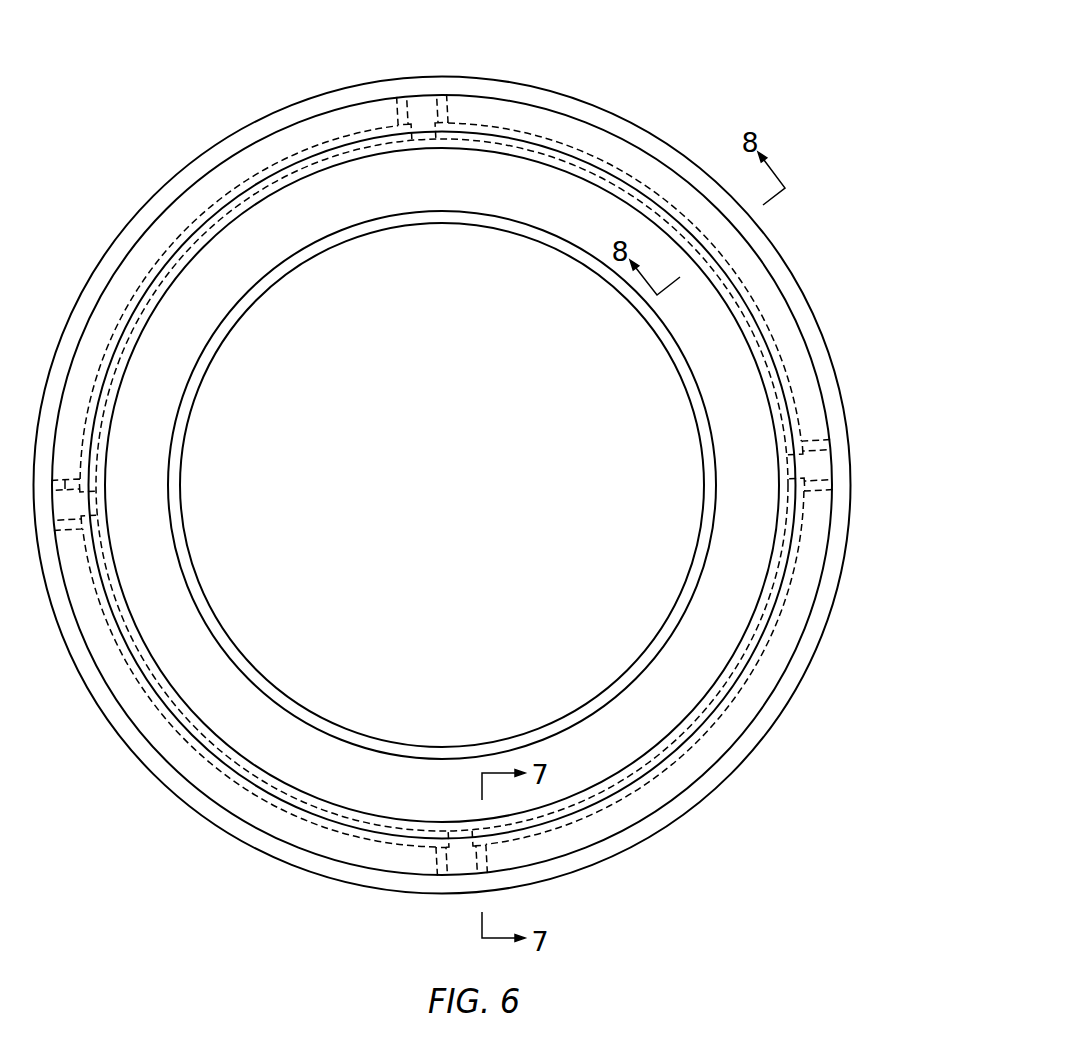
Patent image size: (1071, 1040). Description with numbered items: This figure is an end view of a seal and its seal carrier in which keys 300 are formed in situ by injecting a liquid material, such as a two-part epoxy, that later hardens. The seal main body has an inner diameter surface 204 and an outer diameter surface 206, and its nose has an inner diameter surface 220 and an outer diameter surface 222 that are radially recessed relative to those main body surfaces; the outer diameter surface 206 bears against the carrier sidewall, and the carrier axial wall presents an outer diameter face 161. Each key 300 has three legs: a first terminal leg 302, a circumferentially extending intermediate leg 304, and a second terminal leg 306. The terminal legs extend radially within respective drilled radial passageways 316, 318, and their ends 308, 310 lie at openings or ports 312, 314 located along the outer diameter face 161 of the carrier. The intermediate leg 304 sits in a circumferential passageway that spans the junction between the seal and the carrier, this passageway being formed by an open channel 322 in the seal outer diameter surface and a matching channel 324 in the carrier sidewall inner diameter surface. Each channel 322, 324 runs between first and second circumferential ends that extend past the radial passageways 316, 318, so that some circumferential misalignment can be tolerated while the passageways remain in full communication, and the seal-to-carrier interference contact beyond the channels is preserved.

The outer diameter face 161 is at (812, 355).
The inner diameter surface 204 is at (245, 312).
The outer diameter surface 206 is at (758, 320).
The inner diameter surface 220 is at (302, 252).
The outer diameter surface 222 is at (723, 285).
The key 300 is at (224, 139).
The first terminal leg 302 is at (441, 117).
The intermediate leg 304 is at (644, 188).
The second terminal leg 306 is at (808, 447).
The end 308 is at (429, 81).
The end 310 is at (810, 484).
The opening 312 is at (423, 72).
The opening 314 is at (866, 438).
The radial passageway 316 is at (68, 472).
The radial passageway 318 is at (404, 119).
The channel 322 is at (555, 144).
The channel 324 is at (567, 160).